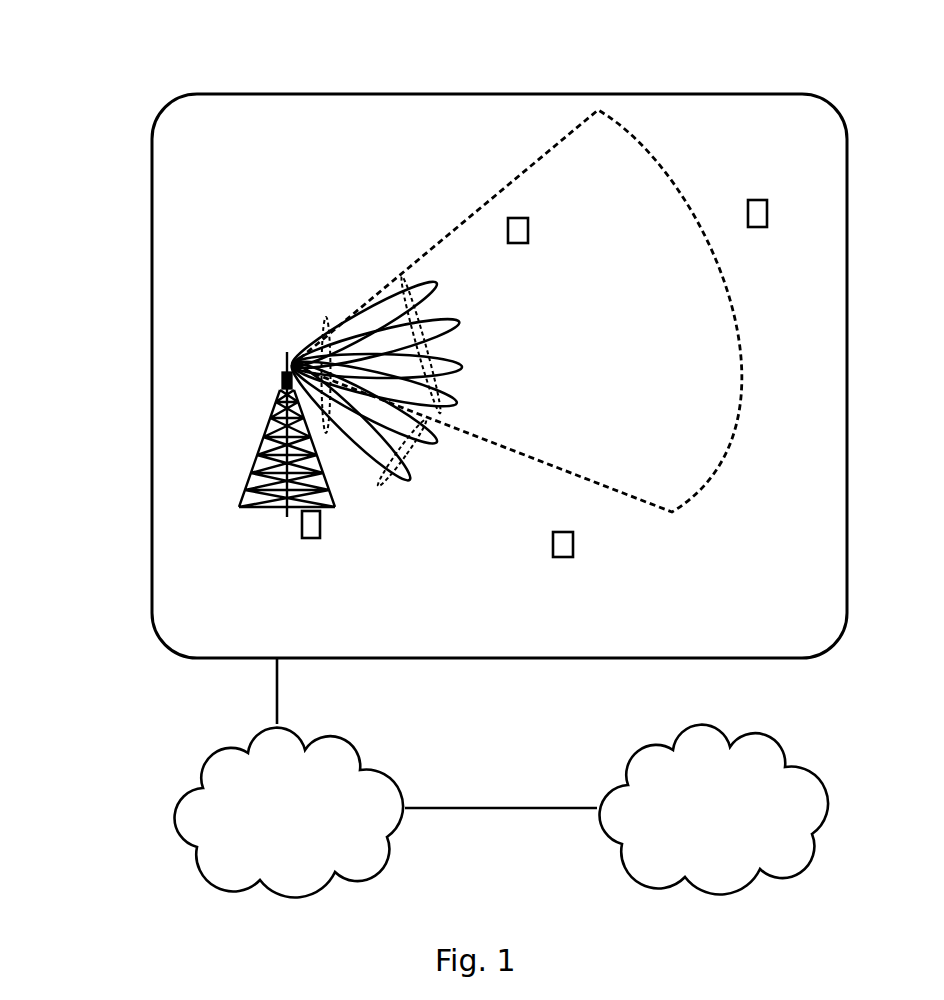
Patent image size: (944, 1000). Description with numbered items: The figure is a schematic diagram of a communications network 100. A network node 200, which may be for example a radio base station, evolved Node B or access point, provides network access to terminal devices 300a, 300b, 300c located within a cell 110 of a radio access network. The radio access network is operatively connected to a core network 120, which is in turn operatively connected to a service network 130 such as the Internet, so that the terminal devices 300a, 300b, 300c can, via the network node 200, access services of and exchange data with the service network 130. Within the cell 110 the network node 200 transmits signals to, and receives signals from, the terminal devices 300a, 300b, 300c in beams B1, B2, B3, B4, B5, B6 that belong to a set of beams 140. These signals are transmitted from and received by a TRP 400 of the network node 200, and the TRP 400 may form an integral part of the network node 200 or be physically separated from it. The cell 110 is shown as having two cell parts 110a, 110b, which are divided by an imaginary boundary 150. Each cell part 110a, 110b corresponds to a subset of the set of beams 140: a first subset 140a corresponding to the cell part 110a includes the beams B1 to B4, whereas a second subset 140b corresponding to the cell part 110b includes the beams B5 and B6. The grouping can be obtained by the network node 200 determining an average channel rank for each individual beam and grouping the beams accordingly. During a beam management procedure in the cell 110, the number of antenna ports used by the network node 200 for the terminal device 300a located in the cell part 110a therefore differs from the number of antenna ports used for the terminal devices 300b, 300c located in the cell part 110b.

The communications network 100 is at (232, 61).
The cell 110 is at (152, 557).
The cell part 110a is at (721, 413).
The cell part 110b is at (826, 413).
The core network 120 is at (318, 828).
The service network 130 is at (744, 826).
The set of beams 140 is at (323, 317).
The first subset 140a is at (402, 277).
The second subset 140b is at (378, 486).
The imaginary boundary 150 is at (722, 465).
The network node 200 is at (302, 530).
The terminal device 300a is at (518, 243).
The terminal device 300b is at (563, 557).
The terminal device 300c is at (757, 227).
The TRP 400 is at (284, 366).
The beam B1 is at (383, 324).
The beam B2 is at (392, 343).
The beam B3 is at (393, 369).
The beam B4 is at (391, 392).
The beam B5 is at (379, 415).
The beam B6 is at (363, 437).